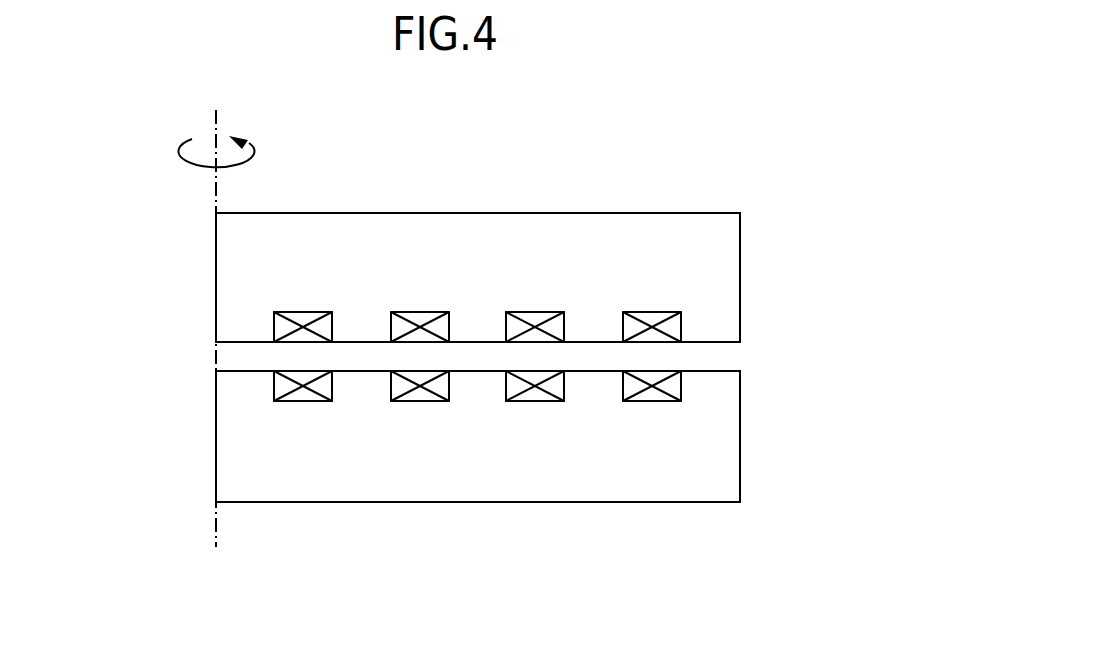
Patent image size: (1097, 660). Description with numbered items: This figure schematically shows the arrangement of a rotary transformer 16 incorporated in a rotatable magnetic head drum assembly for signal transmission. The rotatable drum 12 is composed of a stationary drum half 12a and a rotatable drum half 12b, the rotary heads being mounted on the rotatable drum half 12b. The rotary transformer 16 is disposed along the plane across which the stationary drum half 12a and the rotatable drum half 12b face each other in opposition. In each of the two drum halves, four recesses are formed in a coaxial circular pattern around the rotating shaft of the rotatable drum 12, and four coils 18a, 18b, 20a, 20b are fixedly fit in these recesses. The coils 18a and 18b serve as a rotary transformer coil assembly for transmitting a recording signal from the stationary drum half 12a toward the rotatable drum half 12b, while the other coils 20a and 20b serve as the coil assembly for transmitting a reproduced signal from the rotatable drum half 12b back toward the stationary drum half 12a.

The rotatable drum 12 is at (495, 328).
The stationary drum half 12a is at (723, 430).
The rotatable drum half 12b is at (723, 277).
The rotary transformer 16 is at (367, 236).
The coil 18a is at (303, 312).
The coil 18b is at (420, 312).
The coil 20a is at (535, 312).
The coil 20b is at (652, 312).